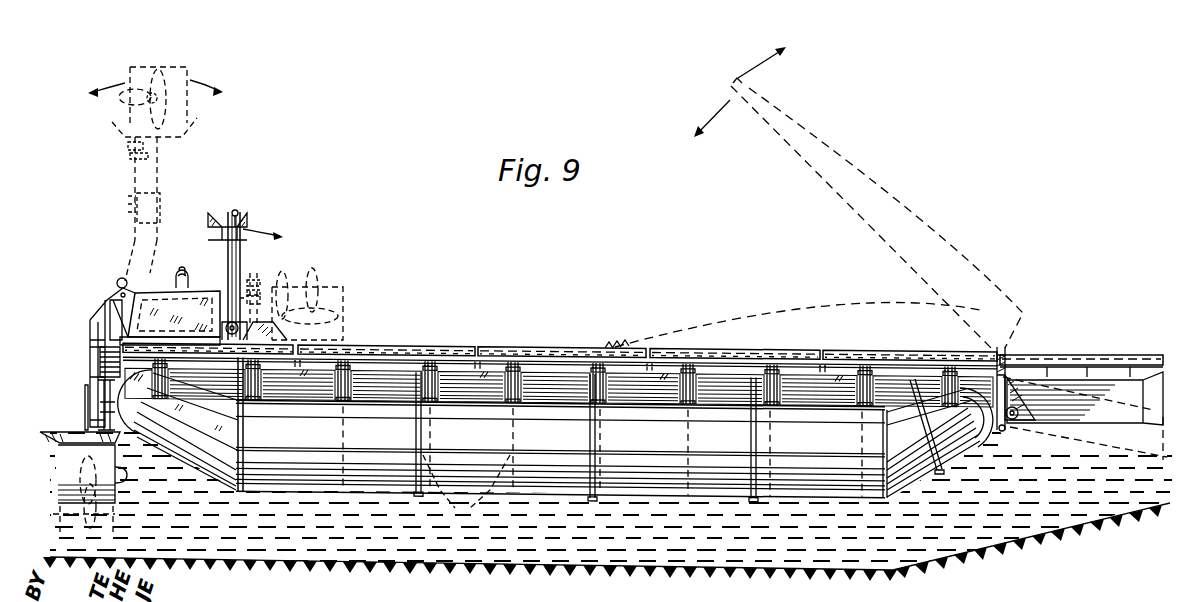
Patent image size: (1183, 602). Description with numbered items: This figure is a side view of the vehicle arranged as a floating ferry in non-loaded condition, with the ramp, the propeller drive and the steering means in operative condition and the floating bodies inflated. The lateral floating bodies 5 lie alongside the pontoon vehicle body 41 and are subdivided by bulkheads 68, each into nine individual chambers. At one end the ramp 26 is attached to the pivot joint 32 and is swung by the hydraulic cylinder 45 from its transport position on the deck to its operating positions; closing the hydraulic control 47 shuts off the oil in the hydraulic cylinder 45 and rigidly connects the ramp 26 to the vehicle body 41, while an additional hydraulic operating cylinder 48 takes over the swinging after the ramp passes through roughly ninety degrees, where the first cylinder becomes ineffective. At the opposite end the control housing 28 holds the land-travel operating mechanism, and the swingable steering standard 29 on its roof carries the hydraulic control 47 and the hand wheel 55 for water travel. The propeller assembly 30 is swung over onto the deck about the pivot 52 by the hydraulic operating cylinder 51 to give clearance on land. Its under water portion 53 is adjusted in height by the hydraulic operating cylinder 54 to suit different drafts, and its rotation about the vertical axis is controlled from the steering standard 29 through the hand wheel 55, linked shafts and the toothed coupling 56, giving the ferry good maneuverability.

The lateral floating bodies 5 is at (375, 492).
The ramp 26 is at (772, 332).
The housing 28 is at (160, 290).
The steering standard 29 is at (242, 262).
The propeller assembly 30 is at (88, 385).
The pivot joint 32 is at (997, 347).
The vehicle body 41 is at (545, 352).
The hydraulic cylinder 45 is at (1004, 432).
The hydraulic control 47 is at (237, 211).
The additional hydraulic operating cylinder 48 is at (1008, 393).
The hydraulic operating cylinder 51 is at (109, 300).
The pivot 52 is at (121, 278).
The under water portion 53 is at (187, 117).
The hydraulic operating cylinder 54 is at (130, 160).
The hand wheel 55 is at (210, 223).
The toothed coupling 56 is at (132, 205).
The bulkheads 68 is at (466, 493).